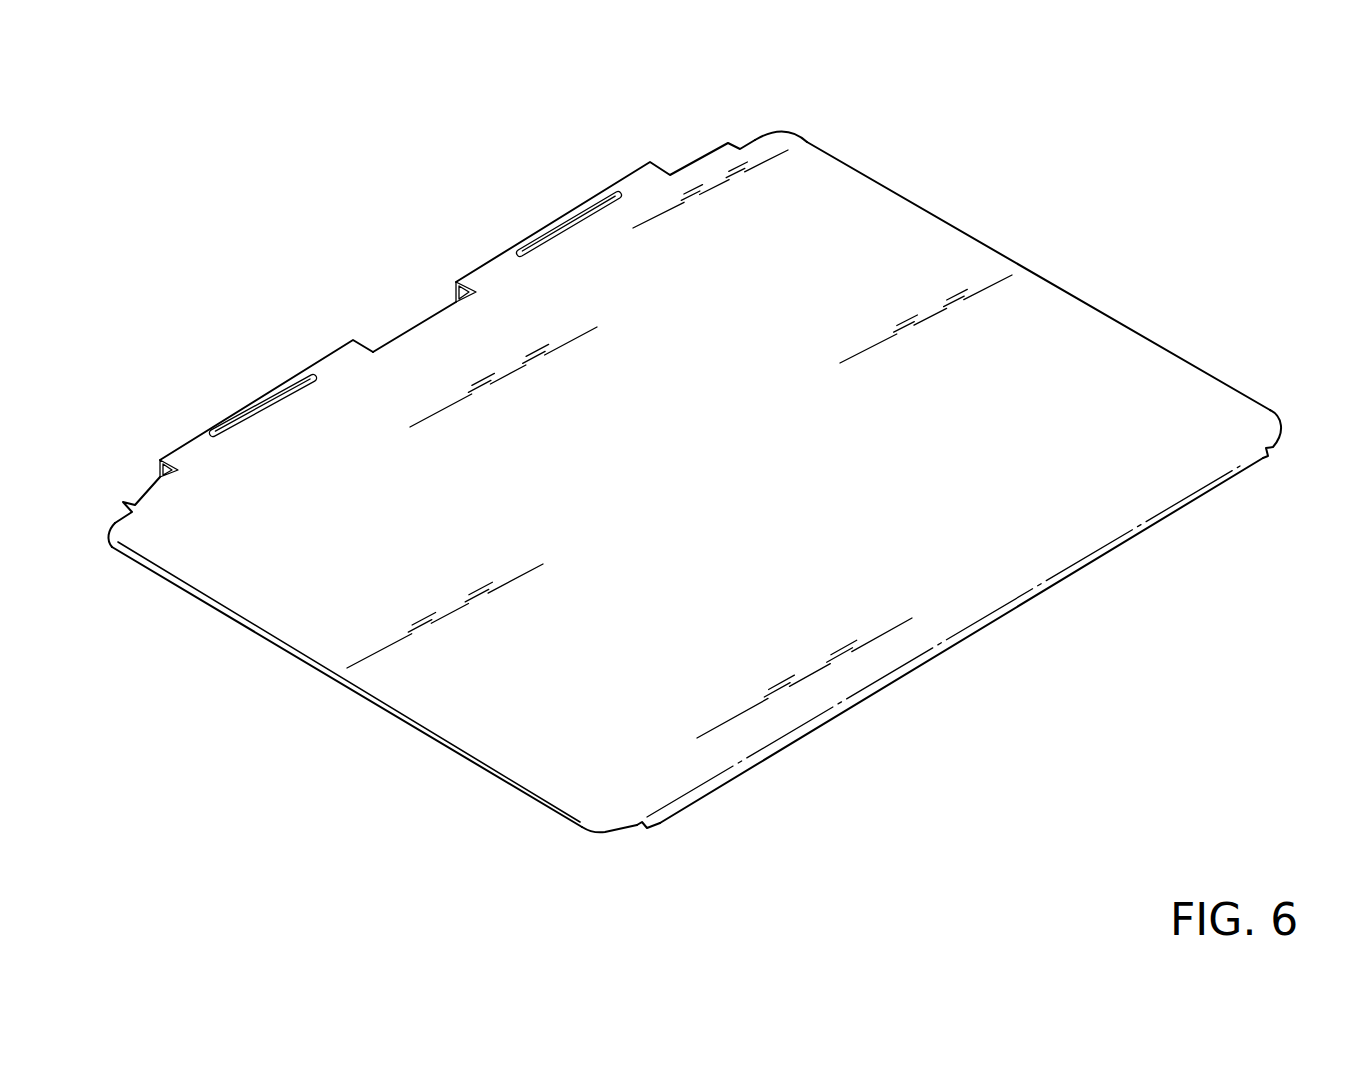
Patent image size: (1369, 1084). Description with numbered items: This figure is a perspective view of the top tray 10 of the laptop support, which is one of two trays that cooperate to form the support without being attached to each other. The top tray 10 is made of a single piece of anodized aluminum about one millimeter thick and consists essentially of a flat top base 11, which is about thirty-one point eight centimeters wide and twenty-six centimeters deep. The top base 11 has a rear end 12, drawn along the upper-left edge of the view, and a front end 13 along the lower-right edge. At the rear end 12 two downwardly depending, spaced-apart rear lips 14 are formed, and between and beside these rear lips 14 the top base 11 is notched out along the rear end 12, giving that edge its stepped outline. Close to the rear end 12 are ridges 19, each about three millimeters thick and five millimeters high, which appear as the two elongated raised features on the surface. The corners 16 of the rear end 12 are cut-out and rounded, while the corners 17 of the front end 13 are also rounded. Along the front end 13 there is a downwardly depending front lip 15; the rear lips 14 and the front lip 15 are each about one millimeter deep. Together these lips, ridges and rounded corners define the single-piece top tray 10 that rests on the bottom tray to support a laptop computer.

The top tray 10 is at (1080, 247).
The top base 11 is at (842, 207).
The rear end 12 is at (189, 437).
The front end 13 is at (880, 680).
The rear lip 14 is at (157, 472).
The front lip 15 is at (660, 817).
The corner 16 is at (778, 145).
The corner 17 is at (1242, 418).
The ridge 19 is at (285, 388).